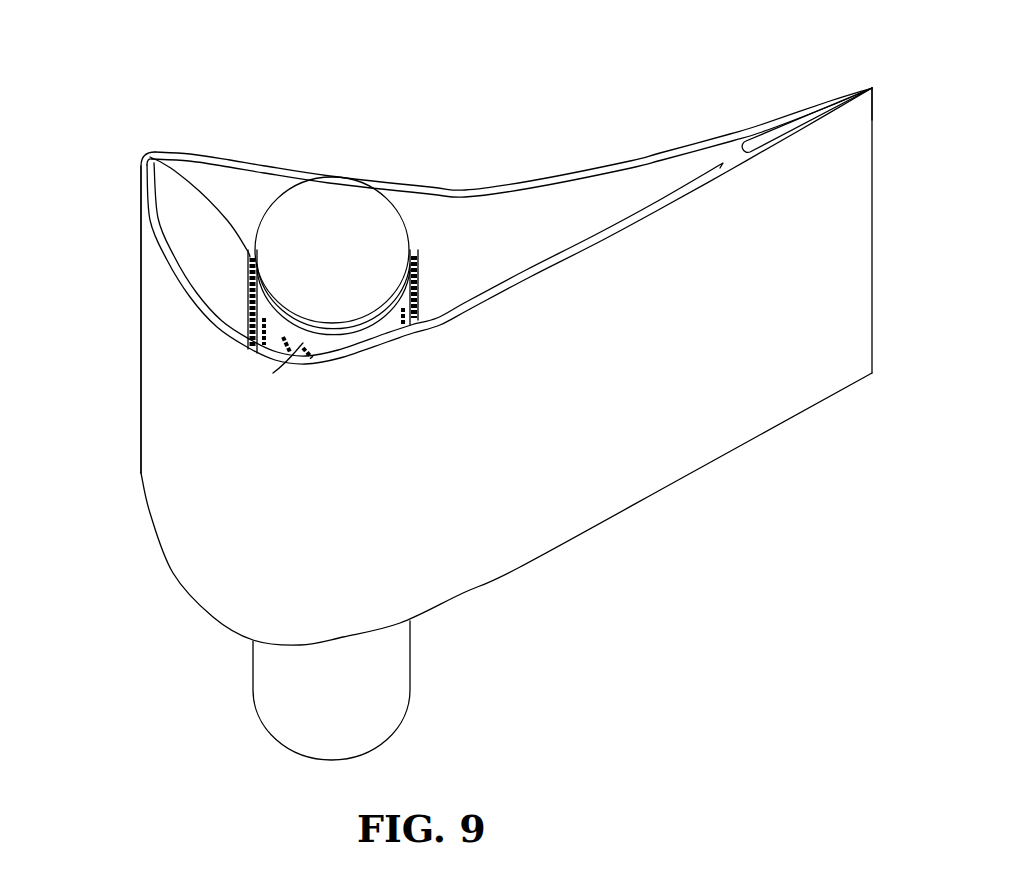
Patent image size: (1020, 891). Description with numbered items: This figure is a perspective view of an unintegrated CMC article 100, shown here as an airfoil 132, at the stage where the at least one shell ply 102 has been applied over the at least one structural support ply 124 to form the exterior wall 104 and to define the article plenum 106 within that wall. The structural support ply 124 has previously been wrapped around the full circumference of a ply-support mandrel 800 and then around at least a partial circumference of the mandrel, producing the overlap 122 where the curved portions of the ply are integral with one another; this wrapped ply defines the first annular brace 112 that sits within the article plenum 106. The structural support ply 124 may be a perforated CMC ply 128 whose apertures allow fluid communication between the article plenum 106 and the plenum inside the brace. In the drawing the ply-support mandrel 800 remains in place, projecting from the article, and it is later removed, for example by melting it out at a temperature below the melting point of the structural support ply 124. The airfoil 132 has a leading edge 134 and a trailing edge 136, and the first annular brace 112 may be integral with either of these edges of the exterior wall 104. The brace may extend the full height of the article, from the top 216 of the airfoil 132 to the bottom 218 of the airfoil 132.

The CMC article 100 is at (240, 108).
The shell ply 102 is at (627, 160).
The exterior wall 104 is at (445, 186).
The article plenum 106 is at (540, 232).
The first annular brace 112 is at (233, 248).
The overlap 122 is at (273, 373).
The structural support ply 124 is at (472, 293).
The perforated CMC ply 128 is at (150, 157).
The airfoil 132 is at (710, 113).
The leading edge 134 is at (130, 358).
The trailing edge 136 is at (890, 133).
The top 216 is at (677, 150).
The bottom 218 is at (673, 485).
The ply-support mandrel 800 is at (357, 215).